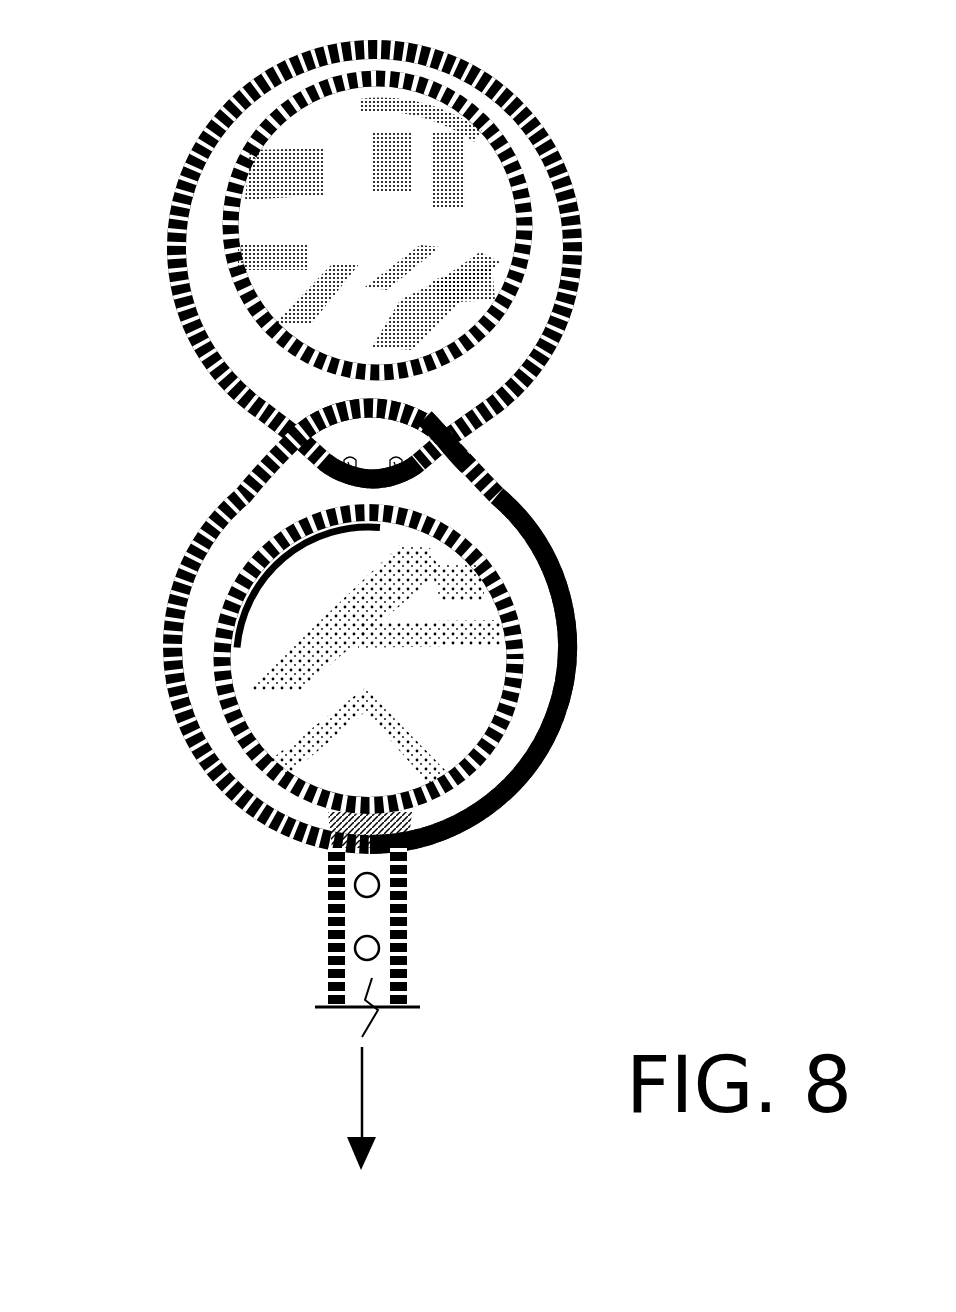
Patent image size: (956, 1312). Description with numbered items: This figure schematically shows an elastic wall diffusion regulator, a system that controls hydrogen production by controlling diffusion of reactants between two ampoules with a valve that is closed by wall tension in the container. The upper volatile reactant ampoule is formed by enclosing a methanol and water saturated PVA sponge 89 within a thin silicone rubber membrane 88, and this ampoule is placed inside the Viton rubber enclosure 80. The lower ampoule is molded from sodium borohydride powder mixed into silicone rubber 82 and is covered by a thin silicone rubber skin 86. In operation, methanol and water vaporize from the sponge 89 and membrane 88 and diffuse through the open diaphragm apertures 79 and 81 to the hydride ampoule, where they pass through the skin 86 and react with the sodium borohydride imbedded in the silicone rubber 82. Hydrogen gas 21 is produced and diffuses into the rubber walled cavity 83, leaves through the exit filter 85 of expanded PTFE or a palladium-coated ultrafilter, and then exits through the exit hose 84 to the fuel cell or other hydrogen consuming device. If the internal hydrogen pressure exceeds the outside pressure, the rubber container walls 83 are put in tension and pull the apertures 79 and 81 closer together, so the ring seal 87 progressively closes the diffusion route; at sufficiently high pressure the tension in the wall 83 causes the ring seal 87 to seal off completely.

The diaphragm aperture 79 is at (390, 403).
The Viton rubber enclosure 80 is at (457, 450).
The diaphragm aperture 81 is at (413, 480).
The sodium borohydride imbedded in silicone rubber 82 is at (472, 637).
The rubber walled cavity 83 is at (497, 806).
The exit hose 84 is at (358, 1007).
The exit filter 85 is at (262, 808).
The silicone rubber skin 86 is at (213, 657).
The ring seal 87 is at (353, 458).
The silicone rubber membrane 88 is at (253, 323).
The methanol and water saturated PVA sponge 89 is at (373, 157).
The hydrogen gas 21 is at (502, 1127).